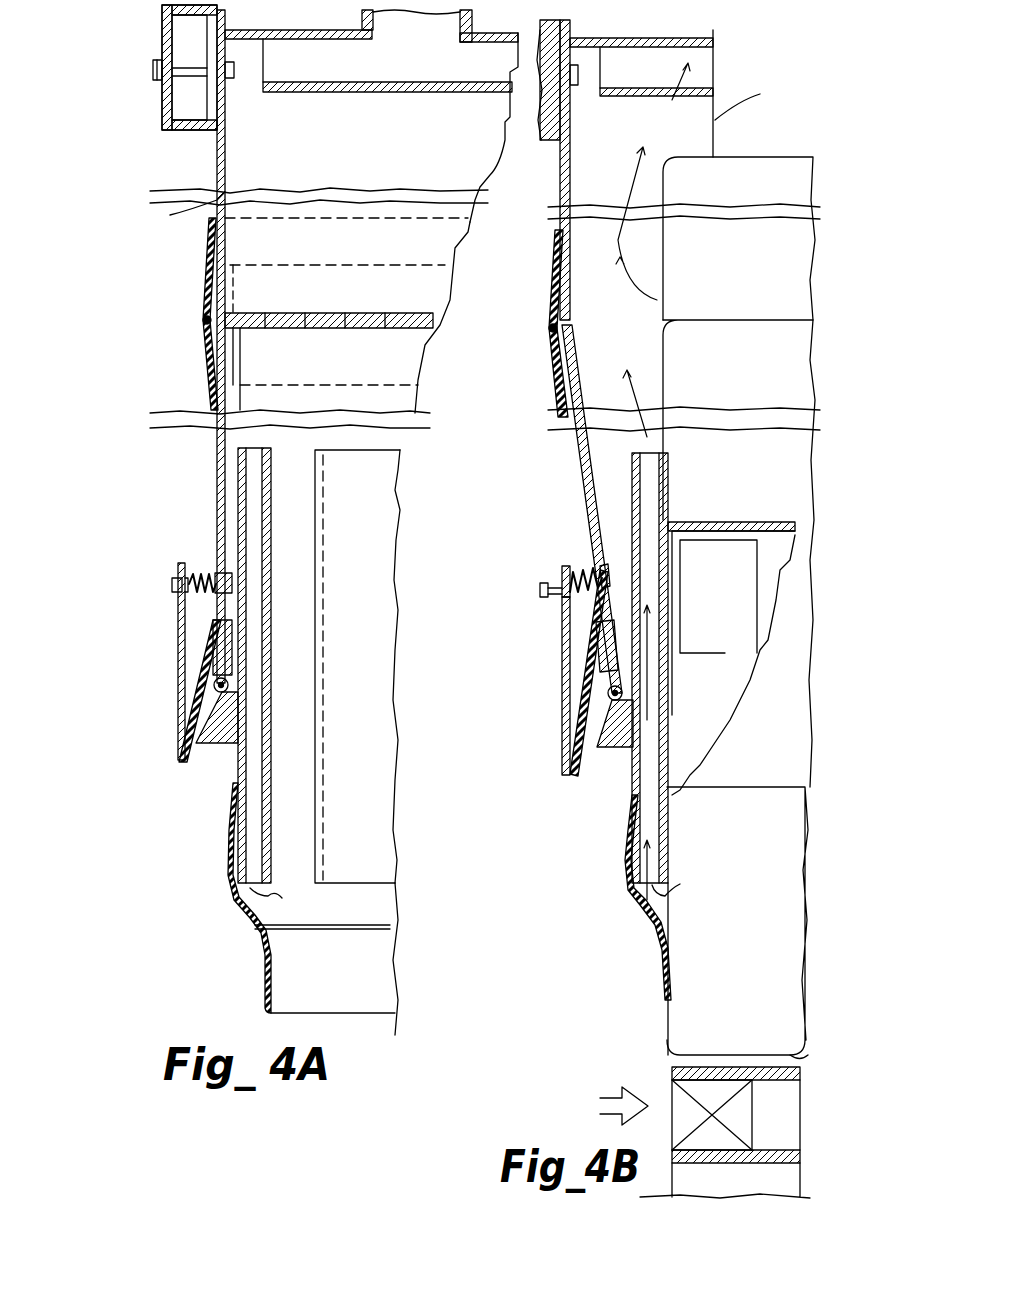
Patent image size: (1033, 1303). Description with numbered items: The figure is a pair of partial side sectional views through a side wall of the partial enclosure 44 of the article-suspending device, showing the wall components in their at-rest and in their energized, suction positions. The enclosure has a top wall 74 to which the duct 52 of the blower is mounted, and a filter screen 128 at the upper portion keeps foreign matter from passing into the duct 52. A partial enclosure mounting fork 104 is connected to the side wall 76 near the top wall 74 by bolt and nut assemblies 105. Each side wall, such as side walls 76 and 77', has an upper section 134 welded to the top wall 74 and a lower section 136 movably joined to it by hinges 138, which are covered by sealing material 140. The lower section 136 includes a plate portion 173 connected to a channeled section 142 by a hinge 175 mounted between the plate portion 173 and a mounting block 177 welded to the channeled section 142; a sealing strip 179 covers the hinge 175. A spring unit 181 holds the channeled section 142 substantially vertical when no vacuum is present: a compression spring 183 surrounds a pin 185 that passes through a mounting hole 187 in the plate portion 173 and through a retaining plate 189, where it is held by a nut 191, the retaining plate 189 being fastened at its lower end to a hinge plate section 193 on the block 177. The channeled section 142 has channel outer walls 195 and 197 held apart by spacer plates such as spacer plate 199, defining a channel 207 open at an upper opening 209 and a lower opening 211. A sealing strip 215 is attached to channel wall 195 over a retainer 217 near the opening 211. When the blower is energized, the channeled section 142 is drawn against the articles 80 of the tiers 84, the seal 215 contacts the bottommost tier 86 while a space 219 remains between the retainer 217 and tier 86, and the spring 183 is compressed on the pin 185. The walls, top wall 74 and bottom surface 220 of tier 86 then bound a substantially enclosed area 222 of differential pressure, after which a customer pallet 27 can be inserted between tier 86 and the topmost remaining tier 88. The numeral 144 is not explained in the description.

In FIG. 4B, the customer pallet 27 is at (788, 1112).
In FIG. 4A, the partial enclosure 44 is at (162, 186).
In FIG. 4B, the partial enclosure 44 is at (755, 55).
In FIG. 4A, the duct 52 is at (362, 16).
In FIG. 4A, the top wall 74 is at (236, 36).
In FIG. 4B, the top wall 74 is at (610, 38).
In FIG. 4A, the side wall 76 is at (217, 160).
In FIG. 4B, the side wall 76 is at (570, 160).
In FIG. 4A, the side wall 77' is at (177, 211).
In FIG. 4B, the articles 80 is at (795, 310).
In FIG. 4B, the tiers 84 is at (800, 362).
In FIG. 4B, the bottommost tier 86 is at (790, 928).
In FIG. 4B, the topmost tier 88 is at (782, 1192).
In FIG. 4A, the partial enclosure mounting fork 104 is at (162, 30).
In FIG. 4A, the bolt and nut assemblies 105 is at (153, 68).
In FIG. 4A, the filter screen 128 is at (283, 82).
In FIG. 4A, the upper section 134 is at (212, 222).
In FIG. 4B, the upper section 134 is at (575, 140).
In FIG. 4A, the lower section 136 is at (416, 358).
In FIG. 4A, the hinges 138 is at (205, 320).
In FIG. 4A, the sealing material 140 is at (210, 260).
In FIG. 4A, the channeled section 142 is at (275, 848).
In FIG. 4B, the channeled section 142 is at (662, 738).
In FIG. 4A, the opening 144 is at (232, 390).
In FIG. 4A, the plate portion 173 is at (420, 340).
In FIG. 4A, the hinge 175 is at (210, 708).
In FIG. 4B, the hinge 175 is at (601, 673).
In FIG. 4A, the mounting block 177 is at (215, 760).
In FIG. 4A, the sealing strip 179 is at (205, 668).
In FIG. 4A, the spring unit 181 is at (140, 614).
In FIG. 4A, the compression spring 183 is at (200, 576).
In FIG. 4B, the compression spring 183 is at (585, 576).
In FIG. 4A, the pin 185 is at (228, 588).
In FIG. 4B, the pin 185 is at (545, 585).
In FIG. 4A, the mounting hole 187 is at (226, 580).
In FIG. 4A, the retaining plate 189 is at (178, 570).
In FIG. 4B, the retaining plate 189 is at (562, 662).
In FIG. 4A, the nut 191 is at (172, 576).
In FIG. 4A, the hinge plate section 193 is at (180, 762).
In FIG. 4A, the channel outer wall 195 is at (245, 705).
In FIG. 4A, the channel outer wall 197 is at (270, 722).
In FIG. 4A, the spacer plate 199 is at (255, 756).
In FIG. 4A, the channel 207 is at (252, 796).
In FIG. 4B, the channel 207 is at (648, 790).
In FIG. 4A, the opening 209 is at (255, 462).
In FIG. 4A, the opening 211 is at (294, 907).
In FIG. 4B, the opening 211 is at (668, 890).
In FIG. 4A, the sealing strip 215 is at (265, 950).
In FIG. 4B, the sealing strip 215 is at (650, 950).
In FIG. 4A, the retainer 217 is at (233, 893).
In FIG. 4B, the retainer 217 is at (628, 896).
In FIG. 4B, the space 219 is at (660, 908).
In FIG. 4B, the bottom surface 220 is at (805, 1058).
In FIG. 4B, the substantially enclosed area 222 is at (605, 355).